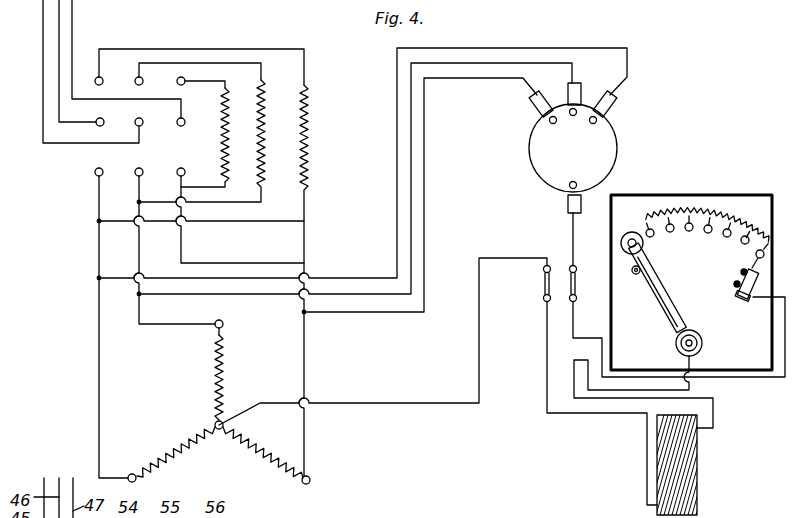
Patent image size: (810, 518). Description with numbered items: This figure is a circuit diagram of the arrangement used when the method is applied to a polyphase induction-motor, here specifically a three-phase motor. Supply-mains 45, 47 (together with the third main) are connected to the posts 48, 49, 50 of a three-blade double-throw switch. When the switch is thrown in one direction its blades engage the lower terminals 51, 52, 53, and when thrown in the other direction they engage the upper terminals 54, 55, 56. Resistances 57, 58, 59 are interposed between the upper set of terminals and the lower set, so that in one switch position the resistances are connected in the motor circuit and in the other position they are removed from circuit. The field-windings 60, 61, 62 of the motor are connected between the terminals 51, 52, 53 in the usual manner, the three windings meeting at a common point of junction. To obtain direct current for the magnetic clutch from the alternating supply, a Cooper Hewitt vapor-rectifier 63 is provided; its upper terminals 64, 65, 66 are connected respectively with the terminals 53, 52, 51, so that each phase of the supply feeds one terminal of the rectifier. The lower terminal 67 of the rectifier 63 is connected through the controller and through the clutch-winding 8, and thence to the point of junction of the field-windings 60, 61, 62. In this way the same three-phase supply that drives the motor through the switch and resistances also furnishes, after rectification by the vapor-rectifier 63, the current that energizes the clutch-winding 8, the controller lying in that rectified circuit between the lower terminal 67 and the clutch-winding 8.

The clutch-winding 8 is at (688, 468).
The supply-main 45 is at (43, 40).
The supply-main 47 is at (72, 30).
The post 48 is at (90, 115).
The post 49 is at (149, 115).
The post 50 is at (181, 126).
The terminal 51 is at (97, 169).
The terminal 52 is at (137, 169).
The terminal 53 is at (179, 169).
The terminal 54 is at (101, 78).
The terminal 55 is at (142, 78).
The terminal 56 is at (184, 78).
The resistance 57 is at (226, 160).
The resistance 58 is at (263, 160).
The resistance 59 is at (306, 160).
The field-winding 60 is at (223, 364).
The field-winding 61 is at (184, 447).
The field-winding 62 is at (250, 447).
The Cooper Hewitt vapor-rectifier 63 is at (590, 155).
The upper terminal 64 is at (530, 110).
The upper terminal 65 is at (567, 90).
The upper terminal 66 is at (612, 100).
The lower terminal 67 is at (560, 183).